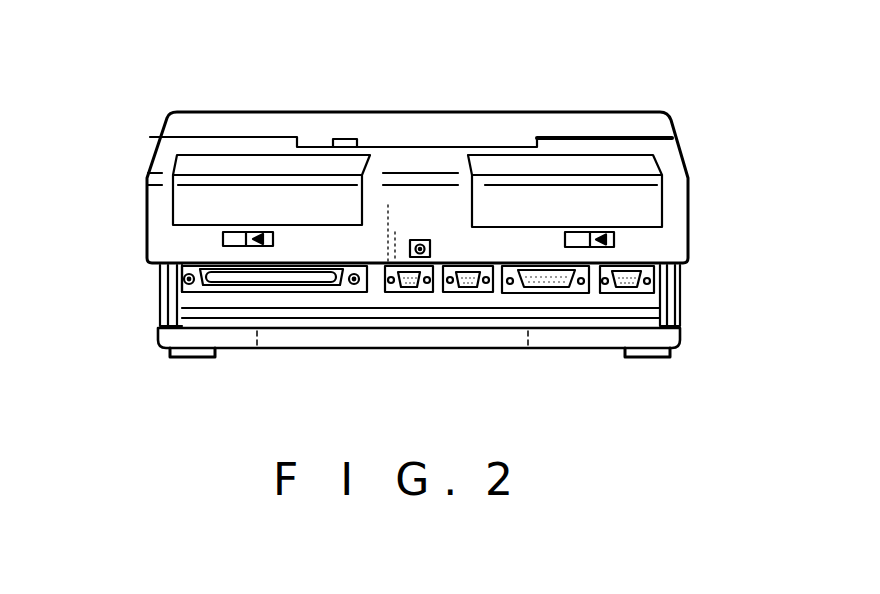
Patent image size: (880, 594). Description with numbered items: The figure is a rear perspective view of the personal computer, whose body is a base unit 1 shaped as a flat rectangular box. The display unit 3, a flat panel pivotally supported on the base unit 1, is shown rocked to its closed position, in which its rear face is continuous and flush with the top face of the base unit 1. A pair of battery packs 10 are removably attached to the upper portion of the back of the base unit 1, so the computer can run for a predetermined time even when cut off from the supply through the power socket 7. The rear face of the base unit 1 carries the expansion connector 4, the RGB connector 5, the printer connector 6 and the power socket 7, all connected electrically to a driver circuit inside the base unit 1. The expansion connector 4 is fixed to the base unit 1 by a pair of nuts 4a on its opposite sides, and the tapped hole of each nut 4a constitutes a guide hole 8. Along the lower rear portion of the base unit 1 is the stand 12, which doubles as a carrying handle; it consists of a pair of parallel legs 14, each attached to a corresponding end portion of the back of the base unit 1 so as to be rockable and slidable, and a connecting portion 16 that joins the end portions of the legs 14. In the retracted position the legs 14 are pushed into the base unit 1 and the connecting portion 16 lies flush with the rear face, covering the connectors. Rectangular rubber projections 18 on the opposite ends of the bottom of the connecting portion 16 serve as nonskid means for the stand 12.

The base unit 1 is at (690, 182).
The display unit 3 is at (498, 125).
The battery packs 10 is at (278, 163).
The power socket 7 is at (420, 240).
The legs 14 is at (165, 305).
The expansion connector 4 is at (300, 287).
The nuts 4a is at (203, 292).
The guide hole 8 is at (170, 280).
The printer connector 6 is at (549, 293).
The RGB connector 5 is at (612, 293).
The connecting portion 16 is at (450, 340).
The stand 12 is at (489, 354).
The rubber projections 18 is at (190, 360).